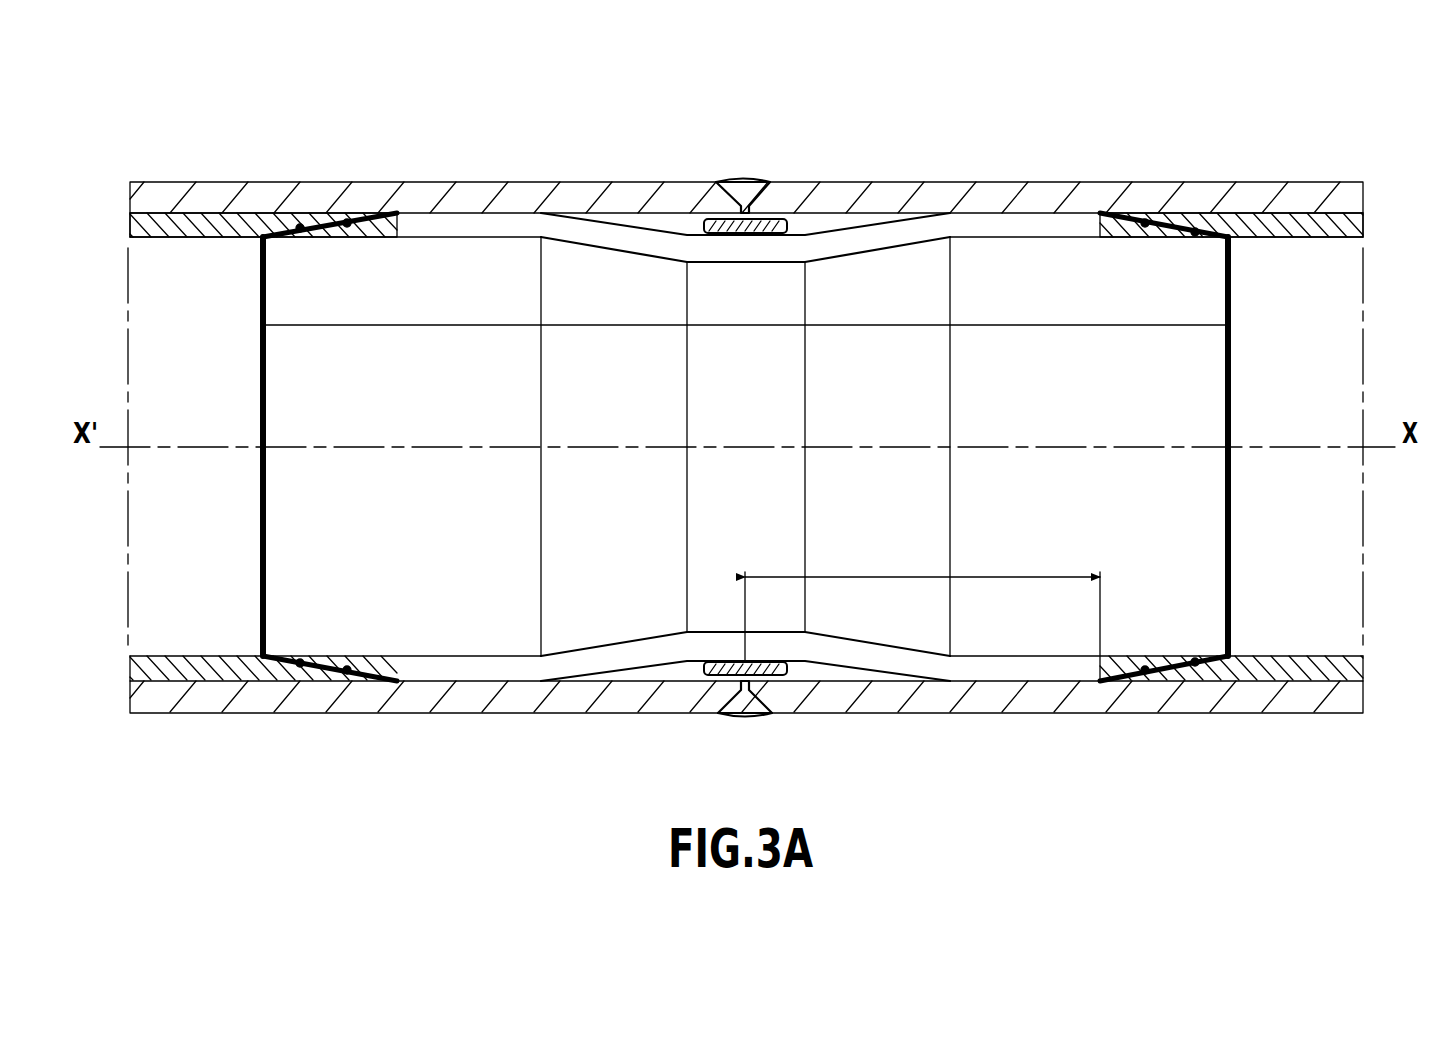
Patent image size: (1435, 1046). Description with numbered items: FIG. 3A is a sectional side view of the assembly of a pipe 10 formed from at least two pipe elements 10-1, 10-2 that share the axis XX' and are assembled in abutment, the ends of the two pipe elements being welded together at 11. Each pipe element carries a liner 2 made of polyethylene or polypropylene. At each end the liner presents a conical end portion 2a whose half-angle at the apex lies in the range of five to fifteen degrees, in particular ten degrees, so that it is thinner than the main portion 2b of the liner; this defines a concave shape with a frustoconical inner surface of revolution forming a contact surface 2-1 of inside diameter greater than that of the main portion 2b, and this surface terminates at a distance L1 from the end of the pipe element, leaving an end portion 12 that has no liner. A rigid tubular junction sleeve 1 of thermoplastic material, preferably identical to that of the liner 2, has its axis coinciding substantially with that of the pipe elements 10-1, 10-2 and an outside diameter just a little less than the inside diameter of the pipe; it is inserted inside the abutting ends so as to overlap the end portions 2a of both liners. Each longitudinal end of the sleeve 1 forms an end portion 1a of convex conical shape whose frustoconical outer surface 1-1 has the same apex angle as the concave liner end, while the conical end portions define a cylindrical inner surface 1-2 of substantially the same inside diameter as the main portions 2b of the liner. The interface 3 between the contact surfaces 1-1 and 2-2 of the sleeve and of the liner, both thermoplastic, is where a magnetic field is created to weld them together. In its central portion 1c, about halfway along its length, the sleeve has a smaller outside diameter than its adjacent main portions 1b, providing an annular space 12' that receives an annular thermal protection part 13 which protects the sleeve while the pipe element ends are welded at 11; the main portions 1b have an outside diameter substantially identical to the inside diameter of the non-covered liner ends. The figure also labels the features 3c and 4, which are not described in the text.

The pipe 10 is at (96, 196).
The pipe element 10-1 is at (528, 176).
The pipe element 10-2 is at (968, 178).
The liner 2 is at (270, 140).
The conical end portion 2a is at (285, 225).
The main portion 2b is at (180, 220).
The contact surface 2-1 is at (355, 222).
The contact surface 2-2 is at (167, 240).
The tubular junction sleeve 1 is at (346, 335).
The frustoconical outer surface 1-1 is at (333, 228).
The cylindrical inner surface 1-2 is at (466, 240).
The end portion 1a is at (357, 237).
The main portion 1b is at (1037, 232).
The central portion 1c is at (763, 250).
The interface 3 is at (335, 218).
The central cavity 3c is at (612, 447).
The fastening points 4 is at (300, 232).
The weld 11 is at (750, 717).
The end portion not having any liner 12 is at (711, 444).
The annular space 12' is at (877, 180).
The annular thermal protection part 13 is at (758, 180).
The distance L1 is at (922, 613).